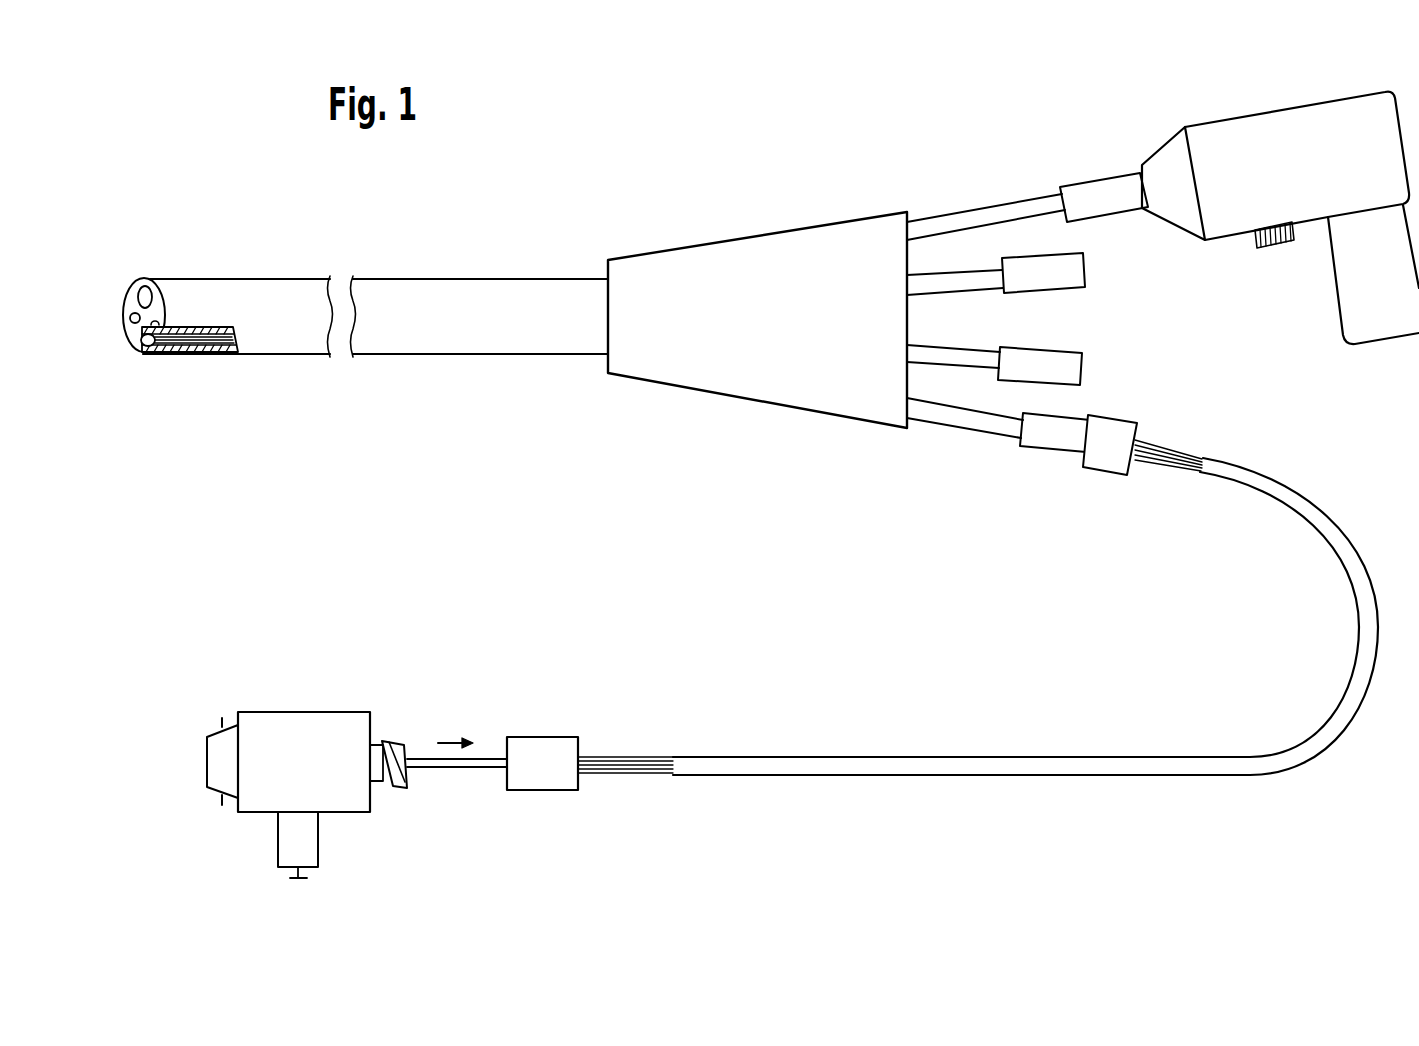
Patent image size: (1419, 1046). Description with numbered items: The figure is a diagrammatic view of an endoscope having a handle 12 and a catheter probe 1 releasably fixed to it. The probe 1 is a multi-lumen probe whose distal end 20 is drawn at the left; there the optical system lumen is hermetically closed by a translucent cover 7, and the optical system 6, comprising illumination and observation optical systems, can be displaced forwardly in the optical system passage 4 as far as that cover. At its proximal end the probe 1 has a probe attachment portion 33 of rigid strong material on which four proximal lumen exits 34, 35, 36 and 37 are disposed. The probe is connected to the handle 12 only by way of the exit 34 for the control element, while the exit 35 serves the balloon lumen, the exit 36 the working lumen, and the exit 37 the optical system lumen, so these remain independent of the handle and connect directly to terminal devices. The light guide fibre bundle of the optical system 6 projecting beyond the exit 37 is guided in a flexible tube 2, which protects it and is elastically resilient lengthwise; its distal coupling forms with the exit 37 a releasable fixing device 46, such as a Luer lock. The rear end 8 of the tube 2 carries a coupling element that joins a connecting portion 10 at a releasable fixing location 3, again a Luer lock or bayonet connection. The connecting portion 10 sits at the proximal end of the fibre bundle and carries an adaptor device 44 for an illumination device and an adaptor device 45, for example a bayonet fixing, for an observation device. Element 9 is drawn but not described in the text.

The catheter probe 1 is at (475, 278).
The flexible tube 2 is at (908, 758).
The releasable fixing location 3 is at (404, 795).
The optical system passage 4 is at (173, 355).
The optical system 6 is at (216, 337).
The translucent cover 7 is at (143, 343).
The rear end of the tube 8 is at (582, 777).
The light guide rod 9 is at (414, 757).
The connecting portion 10 is at (293, 722).
The handle 12 is at (1232, 132).
The distal end 20 is at (128, 300).
The probe attachment portion 33 is at (781, 246).
The proximal lumen exit 34 is at (1022, 205).
The proximal lumen exit 35 is at (952, 275).
The proximal lumen exit 36 is at (962, 352).
The proximal lumen exit 37 is at (982, 428).
The adaptor device 44 is at (287, 840).
The adaptor device 45 is at (215, 762).
The releasable fixing device 46 is at (1113, 462).